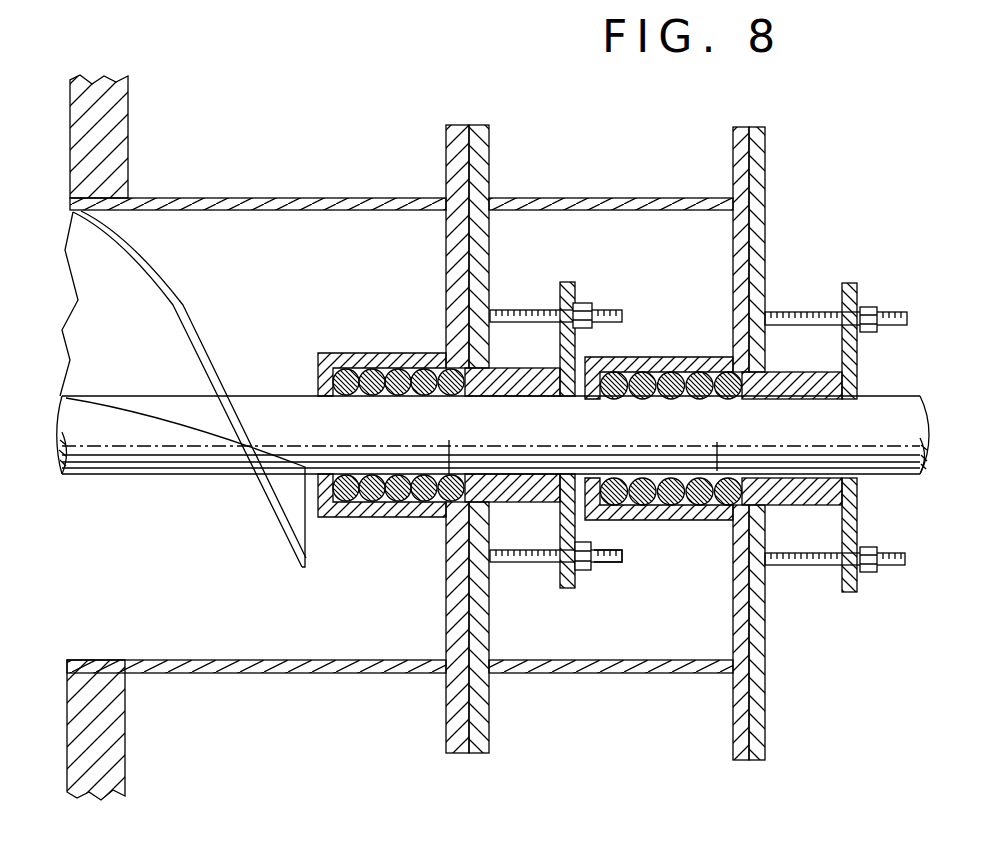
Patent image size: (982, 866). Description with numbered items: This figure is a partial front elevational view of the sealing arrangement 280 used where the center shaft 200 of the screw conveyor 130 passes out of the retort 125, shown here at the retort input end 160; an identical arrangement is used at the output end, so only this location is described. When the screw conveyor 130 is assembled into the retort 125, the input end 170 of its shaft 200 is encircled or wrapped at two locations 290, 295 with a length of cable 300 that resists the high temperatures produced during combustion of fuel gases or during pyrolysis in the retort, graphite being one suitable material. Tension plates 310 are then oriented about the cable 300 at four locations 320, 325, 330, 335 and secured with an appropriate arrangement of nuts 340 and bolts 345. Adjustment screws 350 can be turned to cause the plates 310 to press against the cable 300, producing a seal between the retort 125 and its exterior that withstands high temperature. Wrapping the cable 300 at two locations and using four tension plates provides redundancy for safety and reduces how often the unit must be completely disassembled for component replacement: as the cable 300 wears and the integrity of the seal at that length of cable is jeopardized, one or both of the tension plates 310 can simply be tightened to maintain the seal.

The retort 125 is at (302, 160).
The screw conveyor 130 is at (170, 279).
The input end 160 is at (793, 215).
The input end of the screw conveyor 170 is at (164, 476).
The center shaft 200 is at (283, 393).
The sealing arrangement 280 is at (620, 312).
The first cable wrapping location 290 is at (413, 518).
The second cable wrapping location 295 is at (716, 522).
The cable 300 is at (683, 365).
The tension plates 310 is at (540, 367).
The first tension plate location 320 is at (463, 396).
The second tension plate location 325 is at (449, 445).
The third tension plate location 330 is at (705, 392).
The fourth tension plate location 335 is at (717, 448).
The nuts 340 is at (585, 572).
The bolts 345 is at (604, 563).
The adjustment screws 350 is at (518, 310).